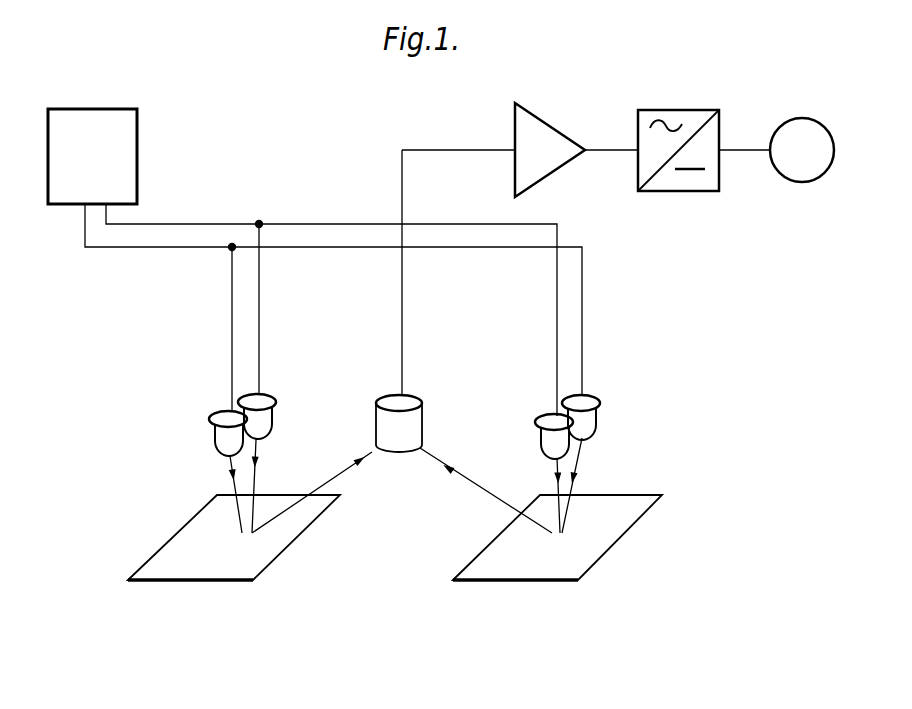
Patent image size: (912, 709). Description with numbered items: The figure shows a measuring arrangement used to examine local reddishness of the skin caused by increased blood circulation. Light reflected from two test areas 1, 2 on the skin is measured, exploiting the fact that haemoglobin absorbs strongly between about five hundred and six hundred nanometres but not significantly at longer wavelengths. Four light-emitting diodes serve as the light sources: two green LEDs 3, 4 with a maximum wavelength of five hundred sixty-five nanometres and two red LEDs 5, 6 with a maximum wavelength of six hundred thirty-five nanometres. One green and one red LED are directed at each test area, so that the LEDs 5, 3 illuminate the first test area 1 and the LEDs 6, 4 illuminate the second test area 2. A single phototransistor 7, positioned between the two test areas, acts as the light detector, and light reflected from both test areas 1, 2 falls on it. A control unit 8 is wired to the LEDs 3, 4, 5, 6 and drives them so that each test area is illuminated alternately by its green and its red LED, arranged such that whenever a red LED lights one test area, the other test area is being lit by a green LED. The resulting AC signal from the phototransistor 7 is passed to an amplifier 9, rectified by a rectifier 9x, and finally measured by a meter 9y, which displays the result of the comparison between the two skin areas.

The test area on the skin 1 is at (180, 560).
The test area on the skin 2 is at (500, 563).
The green light-emitting diode 3 is at (265, 420).
The green light-emitting diode 4 is at (585, 420).
The red light-emitting diode 5 is at (218, 438).
The red light-emitting diode 6 is at (548, 442).
The phototransistor 7 is at (390, 440).
The control unit 8 is at (125, 123).
The amplifier 9 is at (552, 138).
The rectifier 9x is at (670, 113).
The meter 9y is at (795, 122).